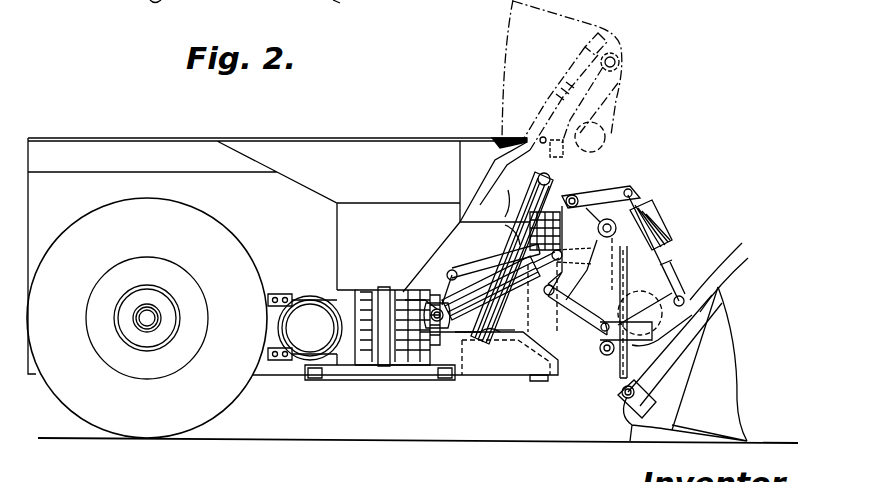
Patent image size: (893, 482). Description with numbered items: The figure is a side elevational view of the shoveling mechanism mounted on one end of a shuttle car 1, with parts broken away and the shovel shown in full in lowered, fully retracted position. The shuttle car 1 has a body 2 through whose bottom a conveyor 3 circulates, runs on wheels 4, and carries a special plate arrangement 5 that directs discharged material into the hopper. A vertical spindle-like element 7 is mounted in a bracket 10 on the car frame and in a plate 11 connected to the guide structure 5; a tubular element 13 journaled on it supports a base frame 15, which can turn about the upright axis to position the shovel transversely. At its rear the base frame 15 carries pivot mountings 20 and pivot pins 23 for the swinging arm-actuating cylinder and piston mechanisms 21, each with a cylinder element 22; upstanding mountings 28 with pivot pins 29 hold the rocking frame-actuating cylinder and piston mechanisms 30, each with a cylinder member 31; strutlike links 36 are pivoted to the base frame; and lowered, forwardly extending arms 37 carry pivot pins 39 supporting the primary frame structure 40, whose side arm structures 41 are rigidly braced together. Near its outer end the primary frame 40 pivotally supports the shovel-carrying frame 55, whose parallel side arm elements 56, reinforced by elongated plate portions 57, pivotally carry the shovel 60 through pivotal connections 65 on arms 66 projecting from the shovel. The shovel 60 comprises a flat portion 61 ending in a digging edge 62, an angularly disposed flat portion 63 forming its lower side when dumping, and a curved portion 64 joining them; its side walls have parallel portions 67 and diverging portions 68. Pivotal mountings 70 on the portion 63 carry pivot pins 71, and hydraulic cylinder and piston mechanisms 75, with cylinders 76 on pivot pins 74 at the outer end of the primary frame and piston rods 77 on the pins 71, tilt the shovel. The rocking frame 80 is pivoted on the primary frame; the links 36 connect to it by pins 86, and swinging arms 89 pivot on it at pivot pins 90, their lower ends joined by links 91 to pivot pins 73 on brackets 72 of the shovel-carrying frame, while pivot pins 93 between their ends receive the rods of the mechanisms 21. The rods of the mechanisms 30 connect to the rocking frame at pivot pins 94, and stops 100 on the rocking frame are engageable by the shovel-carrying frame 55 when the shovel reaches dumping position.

The shuttle car 1 is at (322, 128).
The body 2 is at (130, 146).
The conveyor 3 is at (490, 176).
The wheels 4 is at (112, 427).
The special plate arrangement 5 is at (481, 140).
The vertical spindle-like element 7 is at (540, 381).
The bracket 10 is at (520, 366).
The plate 11 is at (495, 182).
The tubular element 13 is at (500, 295).
The base frame 15 is at (509, 337).
The pivot mountings 20 is at (418, 365).
The swinging arm-actuating cylinder and piston mechanisms 21 is at (460, 332).
The cylinder element 22 is at (492, 320).
The pivot pin 23 is at (433, 317).
The upstanding mountings 28 is at (436, 306).
The pivot pins 29 is at (447, 275).
The rocking frame-actuating cylinder and piston mechanisms 30 is at (448, 254).
The cylinder member 31 is at (459, 268).
The strutlike elements or links 36 is at (507, 227).
The lowered and forwardly extending arms 37 is at (616, 352).
The pivot pins 39 is at (622, 382).
The primary frame structure 40 is at (658, 218).
The side arm structures 41 is at (607, 238).
The shovel-carrying frame 55 is at (668, 341).
The parallel side arm elements 56 is at (672, 327).
The elongated plate portions 57 is at (619, 280).
The shovel 60 is at (742, 347).
The generally flat portion 61 is at (734, 428).
The digging edge 62 is at (750, 441).
The relatively angularly disposed flat portion 63 is at (722, 282).
The curved portion 64 is at (632, 440).
The pivotal connections 65 is at (618, 404).
The arms 66 is at (636, 404).
The parallel portions 67 is at (718, 312).
The diverging portions 68 is at (728, 376).
The pivotal mountings 70 is at (715, 272).
The pivot pins 71 is at (684, 296).
The brackets 72 is at (667, 340).
The pivot pins 73 is at (596, 354).
The pivot pins 74 is at (648, 196).
The hydraulic cylinder and piston mechanisms 75 is at (660, 226).
The cylinders 76 is at (662, 240).
The piston rods 77 is at (643, 250).
The rocking frame 80 is at (608, 152).
The pins 86 is at (540, 174).
The swinging arms 89 is at (636, 190).
The pivot pins 90 is at (580, 196).
The links 91 is at (560, 300).
The pivot pins 93 is at (548, 248).
The pivot pins 94 is at (555, 258).
The stops 100 is at (576, 150).